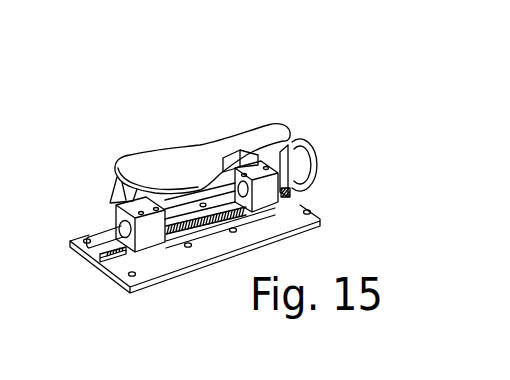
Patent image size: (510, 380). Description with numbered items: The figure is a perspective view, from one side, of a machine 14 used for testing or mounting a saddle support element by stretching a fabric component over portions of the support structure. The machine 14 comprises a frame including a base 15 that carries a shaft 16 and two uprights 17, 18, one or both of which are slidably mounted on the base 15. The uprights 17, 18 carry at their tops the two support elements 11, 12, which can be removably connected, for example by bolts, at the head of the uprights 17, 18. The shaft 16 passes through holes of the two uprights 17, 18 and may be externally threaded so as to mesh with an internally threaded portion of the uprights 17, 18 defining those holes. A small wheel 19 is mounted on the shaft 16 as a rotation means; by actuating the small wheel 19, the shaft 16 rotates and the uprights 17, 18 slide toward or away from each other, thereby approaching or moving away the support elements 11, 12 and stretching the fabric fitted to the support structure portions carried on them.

The support element 11 is at (256, 158).
The support element 12 is at (132, 197).
The machine 14 is at (250, 123).
The base 15 is at (157, 282).
The shaft 16 is at (110, 225).
The upright 17 is at (268, 192).
The upright 18 is at (150, 230).
The small wheel 19 is at (318, 162).